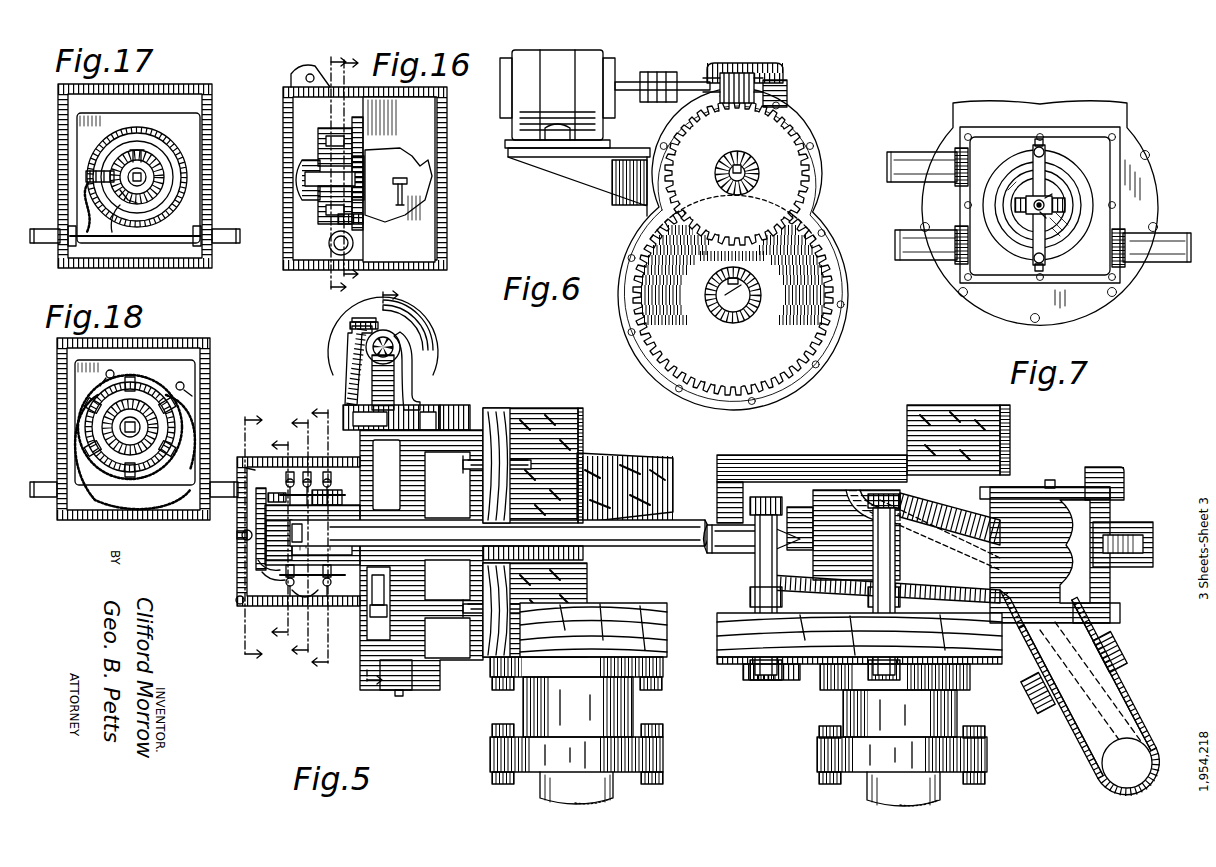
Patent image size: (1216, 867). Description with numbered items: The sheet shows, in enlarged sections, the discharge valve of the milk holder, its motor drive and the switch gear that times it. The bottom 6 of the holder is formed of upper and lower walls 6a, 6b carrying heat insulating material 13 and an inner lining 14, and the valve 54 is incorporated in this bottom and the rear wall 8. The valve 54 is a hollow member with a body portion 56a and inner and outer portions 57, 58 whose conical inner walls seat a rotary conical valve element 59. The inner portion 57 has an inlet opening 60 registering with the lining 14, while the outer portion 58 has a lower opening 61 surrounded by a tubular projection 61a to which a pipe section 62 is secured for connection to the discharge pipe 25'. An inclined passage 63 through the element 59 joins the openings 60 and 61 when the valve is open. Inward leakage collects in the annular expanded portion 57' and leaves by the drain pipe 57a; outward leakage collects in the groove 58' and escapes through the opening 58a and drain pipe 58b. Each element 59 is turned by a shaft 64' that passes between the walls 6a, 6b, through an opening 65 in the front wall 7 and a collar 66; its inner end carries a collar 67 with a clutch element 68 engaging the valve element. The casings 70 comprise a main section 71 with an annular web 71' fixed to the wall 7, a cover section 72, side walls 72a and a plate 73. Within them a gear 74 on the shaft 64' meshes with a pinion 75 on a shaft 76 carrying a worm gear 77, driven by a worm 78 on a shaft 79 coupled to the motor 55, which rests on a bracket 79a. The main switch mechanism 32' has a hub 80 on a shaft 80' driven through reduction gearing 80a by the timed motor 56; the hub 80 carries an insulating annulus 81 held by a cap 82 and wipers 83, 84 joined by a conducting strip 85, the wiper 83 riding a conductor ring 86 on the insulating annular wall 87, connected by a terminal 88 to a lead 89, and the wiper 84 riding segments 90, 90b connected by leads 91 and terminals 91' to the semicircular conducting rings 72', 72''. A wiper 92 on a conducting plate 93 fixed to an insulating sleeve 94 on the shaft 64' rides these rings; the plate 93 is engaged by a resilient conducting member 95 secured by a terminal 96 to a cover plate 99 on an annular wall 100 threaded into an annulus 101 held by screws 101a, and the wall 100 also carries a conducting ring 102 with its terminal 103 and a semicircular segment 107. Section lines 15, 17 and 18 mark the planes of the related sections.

In FIG. 5, the bottom 6 is at (645, 442).
In FIG. 5, the upper wall 6a is at (670, 500).
In FIG. 5, the lower wall 6b is at (667, 628).
In FIG. 5, the front wall 7 is at (249, 539).
In FIG. 5, the rear wall 8 is at (1008, 440).
In FIG. 5, the heat insulating material 13 is at (610, 444).
In FIG. 5, the lining 14 is at (910, 420).
In FIG. 5, the section line 15 is at (270, 539).
In FIG. 16, the section line 18 is at (330, 170).
In FIG. 16, the section line 17 is at (359, 167).
In FIG. 5, the discharge pipe 25' is at (1103, 765).
In FIG. 17, the main switch mechanism 32' is at (135, 231).
In FIG. 18, the main switch mechanism 32' is at (134, 433).
In FIG. 5, the valve 54 is at (1088, 467).
In FIG. 6, the motor 55 is at (605, 103).
In FIG. 5, the motor 55 is at (405, 344).
In FIG. 16, the timed motor 56 is at (399, 179).
In FIG. 5, the body portion 56a is at (953, 448).
In FIG. 5, the inner portion 57 is at (785, 595).
In FIG. 5, the annular expanded portion 57' is at (778, 475).
In FIG. 5, the drain pipe 57a is at (762, 682).
In FIG. 5, the outer portion 58 is at (955, 566).
In FIG. 5, the groove 58' is at (884, 471).
In FIG. 5, the opening 58a is at (870, 640).
In FIG. 5, the drain pipe 58b is at (885, 682).
In FIG. 5, the rotary conical valve element 59 is at (1048, 488).
In FIG. 5, the inlet opening 60 is at (836, 490).
In FIG. 5, the opening 61 is at (995, 585).
In FIG. 5, the tubular projection 61a is at (1022, 682).
In FIG. 5, the pipe section 62 is at (1050, 678).
In FIG. 5, the passage 63 is at (885, 548).
In FIG. 6, the shaft 64' is at (736, 305).
In FIG. 5, the shaft 64' is at (499, 533).
In FIG. 5, the opening 65 is at (583, 556).
In FIG. 5, the collar 66 is at (447, 579).
In FIG. 5, the collar 67 is at (748, 570).
In FIG. 5, the clutch element 68 is at (865, 598).
In FIG. 5, the casings 70 is at (425, 636).
In FIG. 6, the main section 71 is at (744, 249).
In FIG. 5, the main section 71 is at (421, 560).
In FIG. 5, the lateral annular web 71' is at (481, 536).
In FIG. 5, the cover section 72 is at (289, 575).
In FIG. 7, the semicircular conducting ring 72' is at (1031, 222).
In FIG. 5, the semicircular conducting ring 72' is at (246, 560).
In FIG. 7, the semicircular conducting ring 72'' is at (1027, 178).
In FIG. 5, the lateral side walls 72a is at (244, 603).
In FIG. 5, the plate 73 is at (244, 582).
In FIG. 6, the gear 74 is at (815, 302).
In FIG. 5, the gear 74 is at (378, 603).
In FIG. 6, the pinion 75 is at (738, 164).
In FIG. 5, the pinion 75 is at (425, 405).
In FIG. 6, the shaft 76 is at (716, 178).
In FIG. 5, the shaft 76 is at (460, 406).
In FIG. 6, the worm gear 77 is at (775, 140).
In FIG. 5, the worm gear 77 is at (400, 380).
In FIG. 6, the worm 78 is at (748, 76).
In FIG. 5, the worm 78 is at (396, 338).
In FIG. 6, the shaft 79 is at (784, 82).
In FIG. 5, the shaft 79 is at (418, 352).
In FIG. 6, the bracket 79a is at (585, 168).
In FIG. 17, the hub 80 is at (160, 227).
In FIG. 16, the hub 80 is at (354, 220).
In FIG. 17, the shaft 80' is at (166, 176).
In FIG. 16, the shaft 80' is at (370, 186).
In FIG. 16, the reduction gearing 80a is at (364, 218).
In FIG. 17, the annulus 81 is at (155, 160).
In FIG. 16, the annulus 81 is at (320, 150).
In FIG. 16, the cap 82 is at (300, 180).
In FIG. 17, the wiper 83 is at (118, 206).
In FIG. 18, the wiper 84 is at (135, 400).
In FIG. 17, the conducting strip 85 is at (130, 150).
In FIG. 17, the continuous conductor ring 86 is at (124, 196).
In FIG. 17, the annular wall 87 is at (150, 118).
In FIG. 16, the annular wall 87 is at (290, 130).
In FIG. 17, the terminal 88 is at (86, 176).
In FIG. 17, the lead 89 is at (82, 210).
In FIG. 18, the segment 90 is at (160, 385).
In FIG. 18, the segment 90b is at (140, 478).
In FIG. 18, the lead 91 is at (132, 442).
In FIG. 18, the terminals 91' is at (173, 374).
In FIG. 7, the wiper 92 is at (1045, 215).
In FIG. 7, the conducting plate 93 is at (1044, 198).
In FIG. 5, the conducting plate 93 is at (266, 540).
In FIG. 5, the sleeve 94 is at (352, 540).
In FIG. 7, the resilient conducting member 95 is at (1012, 238).
In FIG. 5, the resilient conducting member 95 is at (256, 518).
In FIG. 7, the terminal 96 is at (1050, 200).
In FIG. 5, the terminal 96 is at (237, 536).
In FIG. 7, the cover plate 99 is at (1062, 228).
In FIG. 5, the cover plate 99 is at (262, 572).
In FIG. 7, the annular wall 100 is at (1000, 240).
In FIG. 5, the annular wall 100 is at (290, 590).
In FIG. 7, the annulus 101 is at (1040, 205).
In FIG. 5, the annulus 101 is at (385, 588).
In FIG. 7, the screws 101a is at (1039, 207).
In FIG. 5, the conducting ring 102 is at (330, 596).
In FIG. 5, the terminal 103 is at (327, 472).
In FIG. 5, the semi-circular conducting segment 107 is at (280, 494).